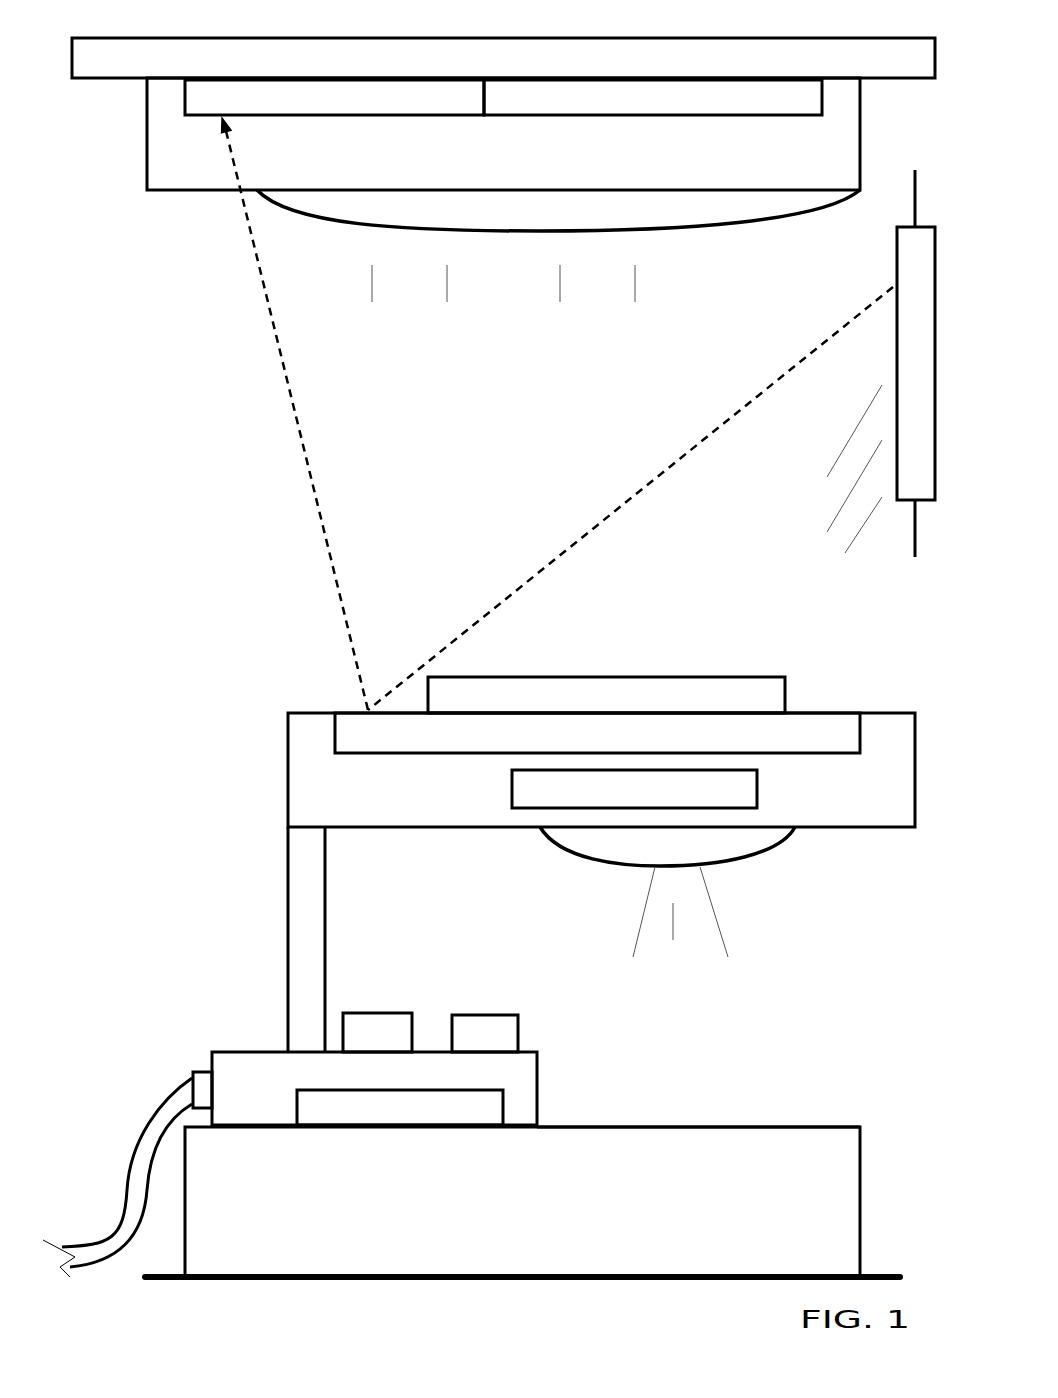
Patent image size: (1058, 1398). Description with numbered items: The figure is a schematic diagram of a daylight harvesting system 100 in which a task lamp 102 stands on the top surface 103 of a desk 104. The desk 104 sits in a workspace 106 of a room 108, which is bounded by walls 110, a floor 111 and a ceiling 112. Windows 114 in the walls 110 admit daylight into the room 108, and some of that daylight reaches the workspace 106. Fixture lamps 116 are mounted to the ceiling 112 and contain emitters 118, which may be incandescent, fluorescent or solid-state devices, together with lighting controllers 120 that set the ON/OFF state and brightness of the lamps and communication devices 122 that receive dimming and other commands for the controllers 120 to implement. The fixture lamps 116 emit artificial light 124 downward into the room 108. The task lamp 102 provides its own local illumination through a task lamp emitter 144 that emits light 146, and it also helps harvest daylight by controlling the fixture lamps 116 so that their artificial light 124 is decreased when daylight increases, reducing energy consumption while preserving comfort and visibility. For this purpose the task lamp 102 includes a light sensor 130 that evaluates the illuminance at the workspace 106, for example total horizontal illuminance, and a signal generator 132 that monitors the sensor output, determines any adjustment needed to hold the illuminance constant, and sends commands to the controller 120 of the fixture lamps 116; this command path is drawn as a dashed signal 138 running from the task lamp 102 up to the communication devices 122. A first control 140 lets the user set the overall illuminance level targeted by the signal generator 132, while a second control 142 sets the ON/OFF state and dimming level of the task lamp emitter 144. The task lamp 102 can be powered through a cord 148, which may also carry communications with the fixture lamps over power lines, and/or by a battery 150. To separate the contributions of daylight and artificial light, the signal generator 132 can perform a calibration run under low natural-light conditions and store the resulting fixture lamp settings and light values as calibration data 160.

The daylight harvesting system 100 is at (730, 36).
The task lamp 102 is at (410, 1084).
The top surface 103 is at (803, 1122).
The desk 104 is at (580, 1214).
The workspace 106 is at (272, 951).
The room 108 is at (585, 444).
The walls 110 is at (913, 190).
The floor 111 is at (902, 1267).
The ceiling 112 is at (578, 72).
The windows 114 is at (897, 245).
The fixture lamps 116 is at (627, 146).
The emitters 118 is at (558, 210).
The lighting controllers 120 is at (802, 109).
The communication devices 122 is at (475, 109).
The artificial light 124 is at (372, 302).
The light sensor 130 is at (723, 707).
The signal generator 132 is at (750, 746).
The control signal 138 is at (337, 607).
The first control 140 is at (397, 1046).
The second control 142 is at (503, 1046).
The task lamp emitter 144 is at (743, 856).
The light 146 is at (713, 898).
The cord 148 is at (178, 1097).
The battery 150 is at (483, 1119).
The calibration data 160 is at (743, 801).